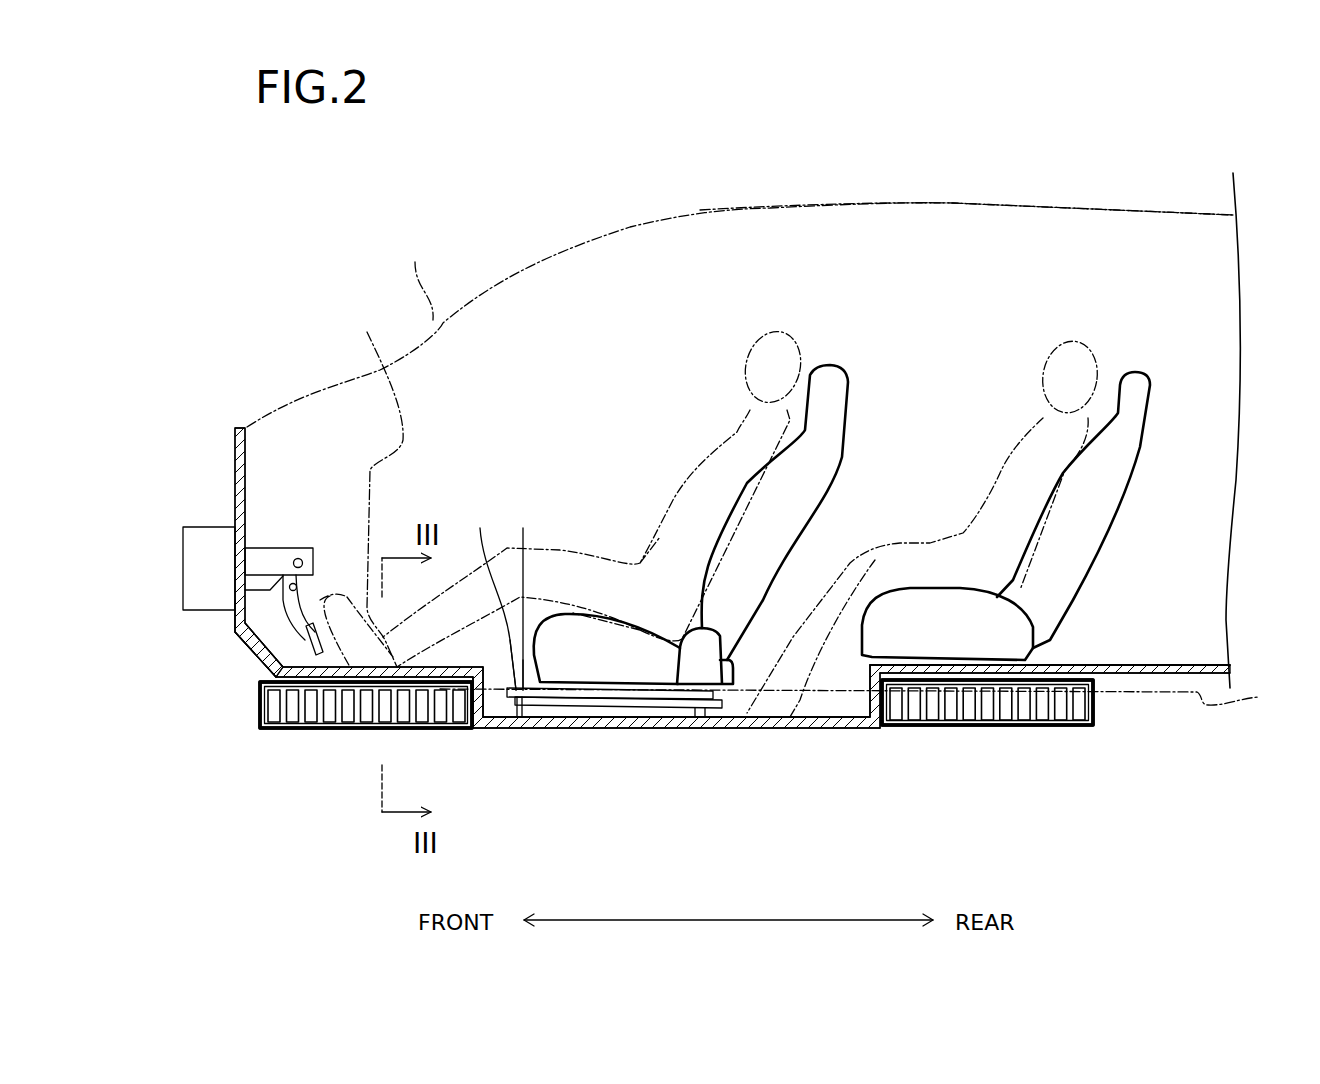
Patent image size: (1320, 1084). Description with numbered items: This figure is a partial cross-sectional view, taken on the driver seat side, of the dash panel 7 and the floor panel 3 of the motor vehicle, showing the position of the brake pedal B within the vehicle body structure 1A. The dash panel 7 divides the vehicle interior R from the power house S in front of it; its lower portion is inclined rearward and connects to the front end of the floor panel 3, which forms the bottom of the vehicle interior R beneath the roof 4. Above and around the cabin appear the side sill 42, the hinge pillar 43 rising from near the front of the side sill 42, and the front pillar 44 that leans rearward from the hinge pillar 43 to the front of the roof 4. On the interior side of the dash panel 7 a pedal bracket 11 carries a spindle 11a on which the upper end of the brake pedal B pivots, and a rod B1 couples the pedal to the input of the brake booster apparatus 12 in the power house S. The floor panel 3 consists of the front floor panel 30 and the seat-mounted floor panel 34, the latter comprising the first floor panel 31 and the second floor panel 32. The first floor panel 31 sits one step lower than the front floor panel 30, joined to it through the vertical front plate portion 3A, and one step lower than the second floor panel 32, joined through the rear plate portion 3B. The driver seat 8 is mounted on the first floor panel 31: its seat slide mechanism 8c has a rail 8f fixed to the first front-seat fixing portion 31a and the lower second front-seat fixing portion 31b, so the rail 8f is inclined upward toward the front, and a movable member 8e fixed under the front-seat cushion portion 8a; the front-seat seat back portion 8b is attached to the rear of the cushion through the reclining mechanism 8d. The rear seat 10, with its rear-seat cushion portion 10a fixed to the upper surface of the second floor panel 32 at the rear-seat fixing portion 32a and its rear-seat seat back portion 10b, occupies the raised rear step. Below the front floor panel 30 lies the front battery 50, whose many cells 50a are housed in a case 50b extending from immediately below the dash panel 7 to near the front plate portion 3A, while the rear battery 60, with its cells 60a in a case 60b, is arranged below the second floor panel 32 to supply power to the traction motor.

The vehicle body structure 1A is at (556, 308).
The roof 4 is at (770, 208).
The side sill 42 is at (870, 695).
The hinge pillar 43 is at (374, 481).
The front pillar 44 is at (413, 276).
The floor panel 3 is at (885, 835).
The dash panel 7 is at (233, 453).
The brake pedal B is at (287, 627).
The rod B1 is at (270, 588).
The front floor panel 30 is at (455, 728).
The front plate portion 3A is at (500, 687).
The first floor panel 31 is at (827, 730).
The rear plate portion 3B is at (862, 713).
The second floor panel 32 is at (907, 730).
The rear-seat fixing portion 32a is at (1023, 660).
The seat-mounted floor panel 34 is at (913, 798).
The brake booster apparatus 12 is at (183, 595).
The power house S is at (172, 514).
The pedal bracket 11 is at (280, 548).
The spindle 11a is at (313, 565).
The front battery 50 is at (343, 764).
The cells 50a is at (345, 716).
The case 50b is at (268, 730).
The rear battery 60 is at (1000, 762).
The cells 60a is at (988, 728).
The case 60b is at (1033, 728).
The first front-seat fixing portion 31a is at (540, 730).
The second front-seat fixing portion 31b is at (707, 730).
The driver seat 8 is at (696, 482).
The front-seat cushion portion 8a is at (588, 613).
The front-seat seat back portion 8b is at (842, 457).
The seat slide mechanism 8c is at (540, 492).
The reclining mechanism 8d is at (723, 633).
The movable member 8e is at (523, 660).
The rail 8f is at (510, 640).
The rear seat 10 is at (1036, 469).
The rear-seat cushion portion 10a is at (1033, 643).
The rear-seat seat back portion 10b is at (1105, 547).
The vehicle interior R is at (652, 417).